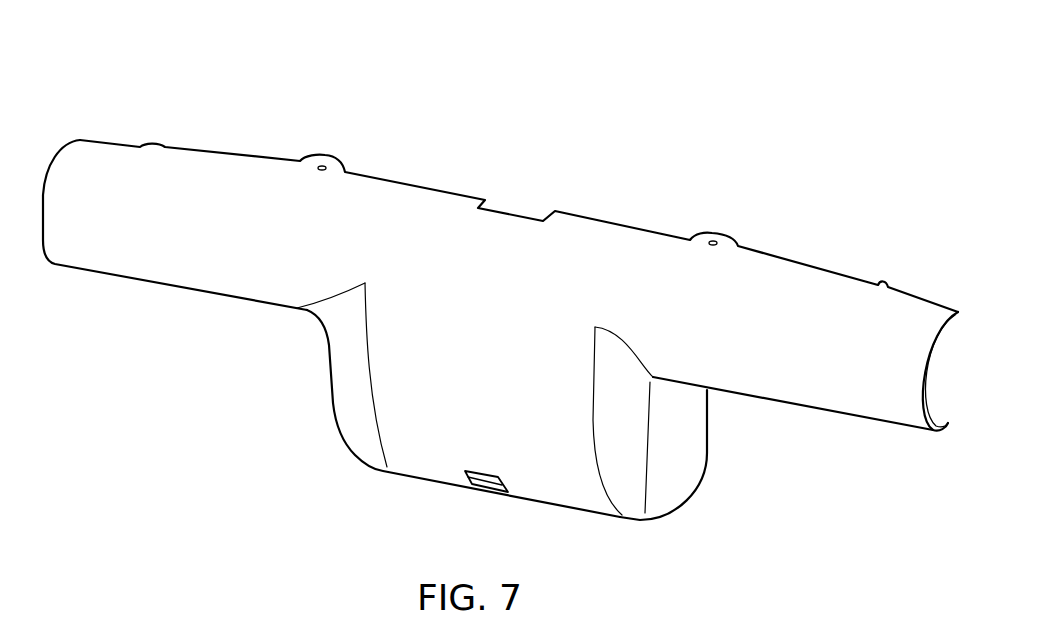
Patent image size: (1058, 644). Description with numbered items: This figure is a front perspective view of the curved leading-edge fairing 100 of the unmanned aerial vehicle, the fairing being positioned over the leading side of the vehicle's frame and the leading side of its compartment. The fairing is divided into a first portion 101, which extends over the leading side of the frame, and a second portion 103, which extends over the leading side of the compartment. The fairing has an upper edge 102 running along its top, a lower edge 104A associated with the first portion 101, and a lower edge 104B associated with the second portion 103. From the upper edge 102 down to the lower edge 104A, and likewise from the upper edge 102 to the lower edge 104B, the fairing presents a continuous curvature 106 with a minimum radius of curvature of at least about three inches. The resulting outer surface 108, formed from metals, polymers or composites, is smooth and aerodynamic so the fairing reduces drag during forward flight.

The curved leading-edge fairing 100 is at (752, 118).
The first portion 101 is at (190, 253).
The upper edge 102 is at (767, 252).
The second portion 103 is at (480, 420).
The lower edge 104A is at (793, 405).
The lower edge 104B is at (677, 513).
The continuous curvature 106 is at (838, 295).
The outer surface 108 is at (503, 337).